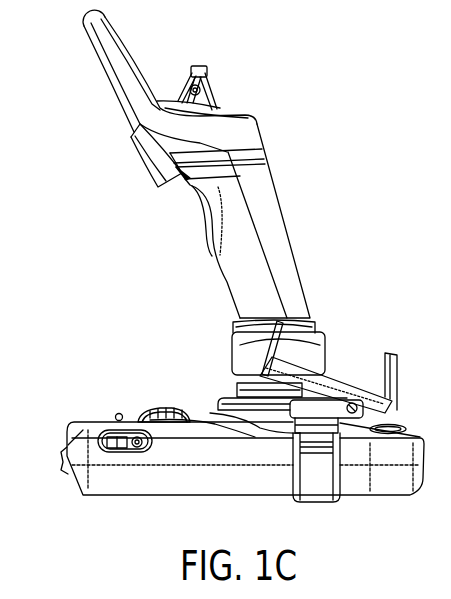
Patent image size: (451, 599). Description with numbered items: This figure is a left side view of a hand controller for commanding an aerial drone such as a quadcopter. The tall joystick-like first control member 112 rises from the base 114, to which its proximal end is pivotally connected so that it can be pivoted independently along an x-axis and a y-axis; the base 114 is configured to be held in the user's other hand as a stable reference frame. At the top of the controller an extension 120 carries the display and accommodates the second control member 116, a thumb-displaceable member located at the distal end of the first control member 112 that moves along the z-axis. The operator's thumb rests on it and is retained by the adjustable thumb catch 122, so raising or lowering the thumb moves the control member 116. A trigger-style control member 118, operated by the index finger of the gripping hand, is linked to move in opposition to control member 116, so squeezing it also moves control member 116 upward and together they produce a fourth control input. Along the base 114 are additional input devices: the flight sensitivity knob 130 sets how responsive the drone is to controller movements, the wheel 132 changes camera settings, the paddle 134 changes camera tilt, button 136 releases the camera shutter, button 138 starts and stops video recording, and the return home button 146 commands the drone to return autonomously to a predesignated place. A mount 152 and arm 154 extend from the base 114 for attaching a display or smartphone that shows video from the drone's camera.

The first control member 112 is at (272, 233).
The base 114 is at (393, 477).
The second control member 116 is at (207, 100).
The control member 118 is at (163, 160).
The extension 120 is at (112, 68).
The thumb catch 122 is at (200, 64).
The flight sensitivity knob 130 is at (168, 409).
The wheel 132 is at (120, 414).
The paddle 134 is at (65, 462).
The button 136 is at (112, 452).
The button 138 is at (133, 452).
The return home button 146 is at (392, 427).
The mount 152 is at (348, 383).
The arm 154 is at (327, 410).